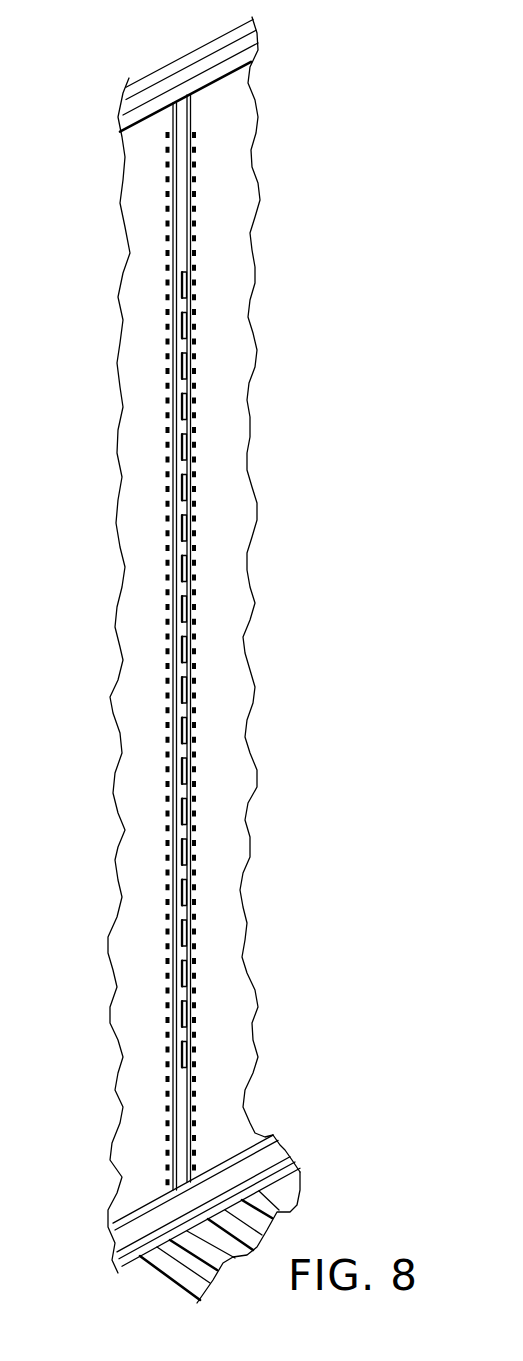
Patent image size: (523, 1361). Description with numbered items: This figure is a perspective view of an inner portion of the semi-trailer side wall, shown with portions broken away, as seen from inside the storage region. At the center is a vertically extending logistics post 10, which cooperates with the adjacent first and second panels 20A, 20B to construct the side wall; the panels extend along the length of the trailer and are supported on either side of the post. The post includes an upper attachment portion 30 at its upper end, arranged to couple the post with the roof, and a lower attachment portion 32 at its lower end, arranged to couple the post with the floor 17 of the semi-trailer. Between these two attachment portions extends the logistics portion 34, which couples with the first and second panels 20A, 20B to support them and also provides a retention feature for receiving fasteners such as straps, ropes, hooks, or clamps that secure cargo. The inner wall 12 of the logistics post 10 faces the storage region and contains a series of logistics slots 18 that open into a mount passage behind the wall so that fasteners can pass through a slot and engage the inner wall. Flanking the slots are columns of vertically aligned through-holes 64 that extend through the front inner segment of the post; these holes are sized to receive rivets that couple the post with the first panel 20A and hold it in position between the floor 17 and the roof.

The logistics post 10 is at (212, 222).
The inner wall 12 is at (177, 388).
The floor 17 is at (303, 1148).
The logistics slots 18 is at (185, 428).
The first panel 20A is at (246, 268).
The second panel 20B is at (140, 260).
The upper attachment portion 30 is at (184, 121).
The lower attachment portion 32 is at (183, 1165).
The logistics portion 34 is at (185, 628).
The through-holes 64 is at (188, 532).